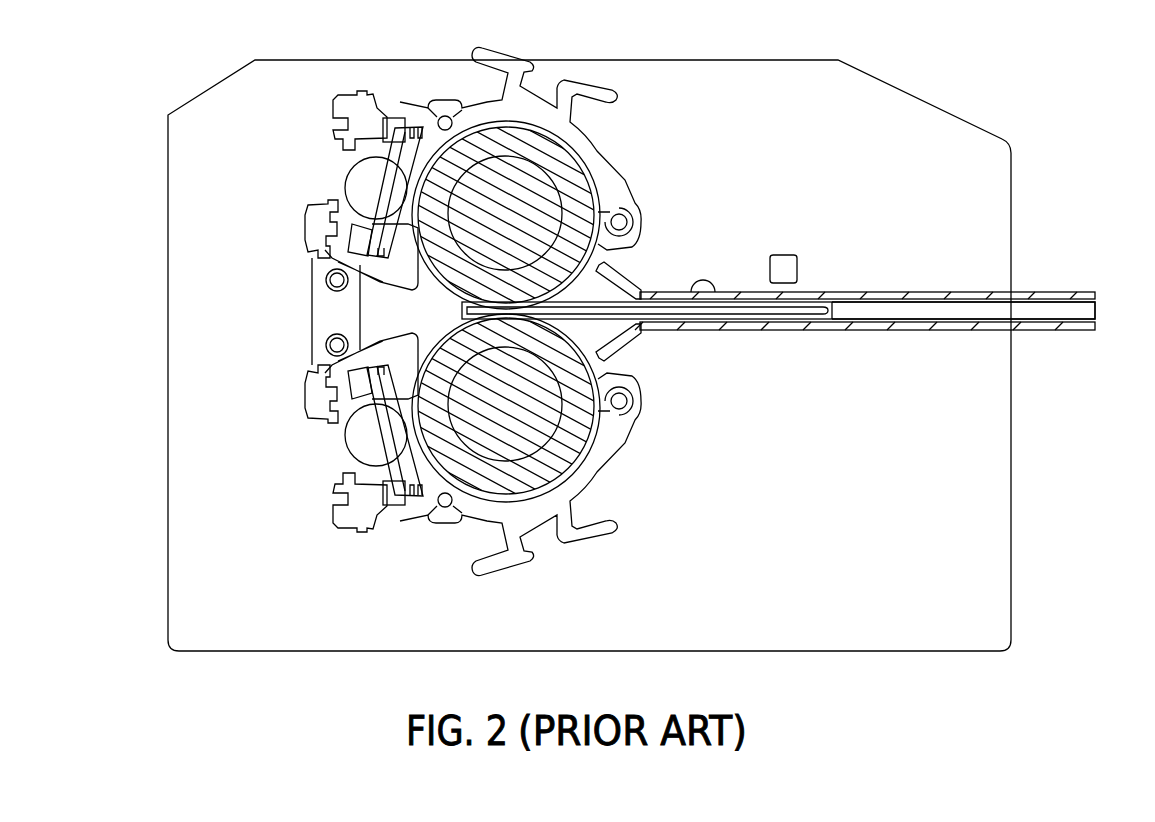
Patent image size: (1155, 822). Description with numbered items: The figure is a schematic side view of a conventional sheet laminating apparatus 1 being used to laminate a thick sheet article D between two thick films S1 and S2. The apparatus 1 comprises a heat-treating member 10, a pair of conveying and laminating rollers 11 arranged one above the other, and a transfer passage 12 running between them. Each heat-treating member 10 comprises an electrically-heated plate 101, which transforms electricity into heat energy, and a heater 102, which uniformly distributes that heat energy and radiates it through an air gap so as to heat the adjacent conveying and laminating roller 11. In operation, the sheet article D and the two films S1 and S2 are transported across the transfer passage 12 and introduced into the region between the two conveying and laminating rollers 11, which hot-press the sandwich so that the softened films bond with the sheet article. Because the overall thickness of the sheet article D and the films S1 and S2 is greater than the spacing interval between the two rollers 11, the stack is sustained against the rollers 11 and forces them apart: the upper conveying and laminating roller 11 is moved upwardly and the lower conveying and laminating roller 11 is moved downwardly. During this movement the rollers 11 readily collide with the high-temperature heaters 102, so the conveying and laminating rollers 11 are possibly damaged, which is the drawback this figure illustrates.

The sheet laminating apparatus 1 is at (957, 44).
The heat-treating member 10 is at (454, 298).
The conveying and laminating roller 11 is at (548, 227).
The transfer passage 12 is at (570, 325).
The electrically-heated plate 101 is at (406, 153).
The heater 102 is at (575, 140).
The film S1 is at (825, 318).
The film S2 is at (838, 297).
The sheet article D is at (770, 308).